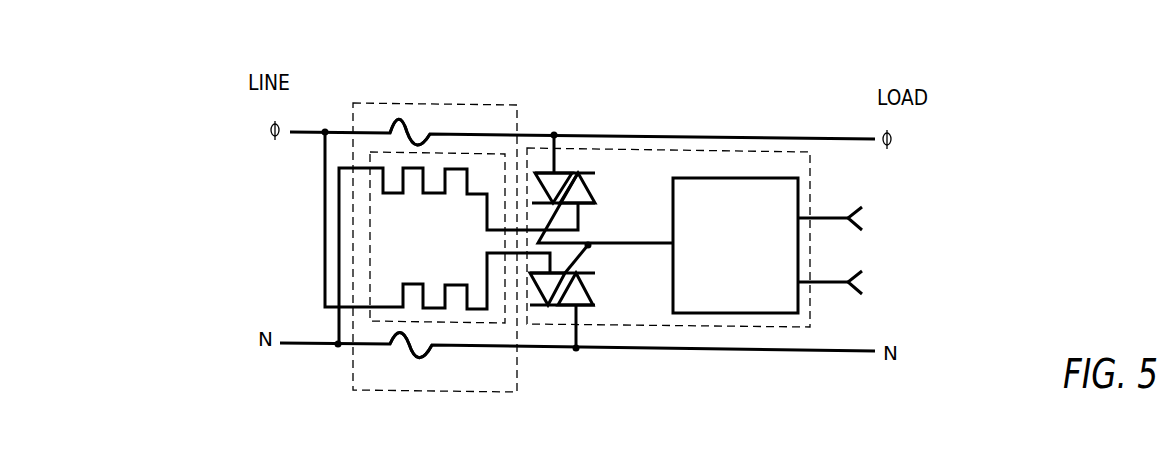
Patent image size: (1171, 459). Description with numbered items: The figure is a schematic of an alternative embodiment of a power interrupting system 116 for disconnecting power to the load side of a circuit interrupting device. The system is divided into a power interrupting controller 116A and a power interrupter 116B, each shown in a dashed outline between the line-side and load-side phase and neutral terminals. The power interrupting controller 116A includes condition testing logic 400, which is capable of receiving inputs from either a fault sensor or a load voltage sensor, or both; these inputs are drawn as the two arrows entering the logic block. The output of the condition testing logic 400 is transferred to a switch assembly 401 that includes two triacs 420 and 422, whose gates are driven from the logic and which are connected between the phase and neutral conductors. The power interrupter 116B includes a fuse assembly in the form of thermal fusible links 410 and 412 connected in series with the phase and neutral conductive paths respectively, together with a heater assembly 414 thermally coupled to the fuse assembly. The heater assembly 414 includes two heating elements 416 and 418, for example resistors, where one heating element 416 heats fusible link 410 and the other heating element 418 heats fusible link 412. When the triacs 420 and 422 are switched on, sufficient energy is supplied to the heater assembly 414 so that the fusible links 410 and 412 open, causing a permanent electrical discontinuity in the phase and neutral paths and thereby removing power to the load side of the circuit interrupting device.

The power interrupting system 116 is at (383, 76).
The power interrupting controller 116A is at (728, 150).
The power interrupter 116B is at (493, 104).
The condition testing logic 400 is at (718, 178).
The switch assembly 401 is at (576, 147).
The thermal fusible link 410 is at (408, 118).
The thermal fusible link 412 is at (405, 345).
The heater assembly 414 is at (490, 152).
The heating element 416 is at (403, 193).
The heating element 418 is at (405, 283).
The triac 420 is at (578, 163).
The triac 422 is at (596, 273).